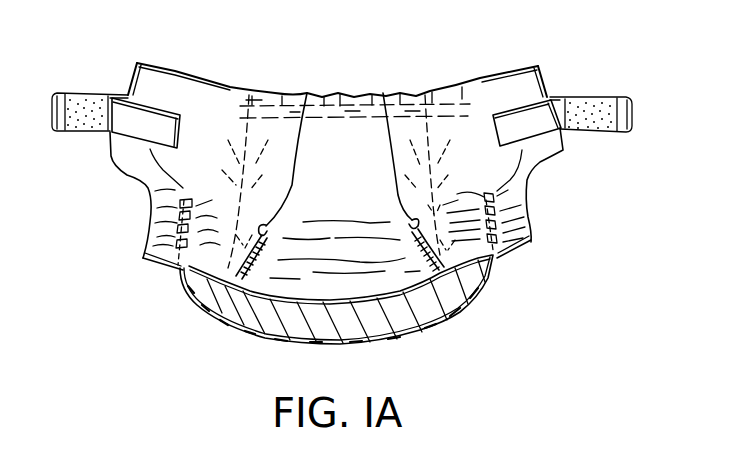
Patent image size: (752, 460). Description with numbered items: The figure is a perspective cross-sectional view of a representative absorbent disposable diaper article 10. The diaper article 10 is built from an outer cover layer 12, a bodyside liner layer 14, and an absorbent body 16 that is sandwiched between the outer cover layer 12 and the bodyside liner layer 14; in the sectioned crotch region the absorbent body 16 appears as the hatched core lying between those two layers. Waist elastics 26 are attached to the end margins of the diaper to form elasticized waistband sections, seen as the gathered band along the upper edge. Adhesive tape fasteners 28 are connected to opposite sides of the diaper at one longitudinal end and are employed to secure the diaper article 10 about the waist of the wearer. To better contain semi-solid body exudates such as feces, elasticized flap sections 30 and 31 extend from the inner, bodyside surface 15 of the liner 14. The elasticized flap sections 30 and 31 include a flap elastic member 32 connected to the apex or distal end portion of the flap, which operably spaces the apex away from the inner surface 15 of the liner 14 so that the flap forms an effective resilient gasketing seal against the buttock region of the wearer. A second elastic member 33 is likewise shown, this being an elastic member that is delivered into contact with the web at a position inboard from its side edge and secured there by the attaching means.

The absorbent disposable diaper article 10 is at (578, 33).
The outer cover layer 12 is at (455, 317).
The bodyside liner layer 14 is at (493, 278).
The inner, bodyside surface 15 is at (535, 163).
The absorbent body 16 is at (248, 312).
The waist elastics 26 is at (332, 102).
The adhesive tape fasteners 28 is at (89, 133).
The elasticized flap section 30 is at (282, 180).
The elasticized flap section 31 is at (387, 163).
The flap elastic member 32 is at (257, 222).
The second elastic member 33 is at (420, 196).